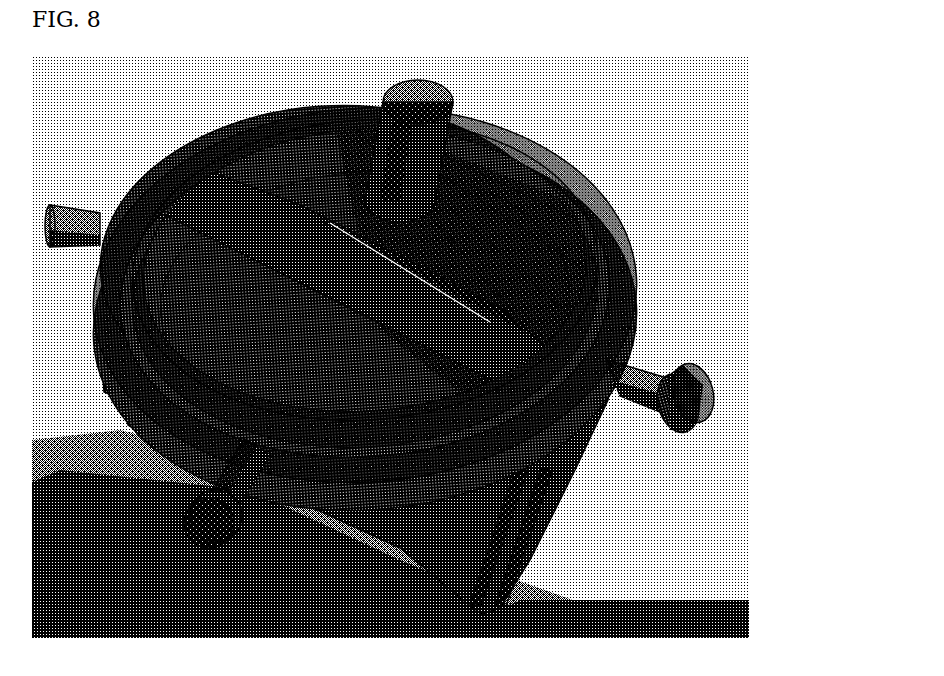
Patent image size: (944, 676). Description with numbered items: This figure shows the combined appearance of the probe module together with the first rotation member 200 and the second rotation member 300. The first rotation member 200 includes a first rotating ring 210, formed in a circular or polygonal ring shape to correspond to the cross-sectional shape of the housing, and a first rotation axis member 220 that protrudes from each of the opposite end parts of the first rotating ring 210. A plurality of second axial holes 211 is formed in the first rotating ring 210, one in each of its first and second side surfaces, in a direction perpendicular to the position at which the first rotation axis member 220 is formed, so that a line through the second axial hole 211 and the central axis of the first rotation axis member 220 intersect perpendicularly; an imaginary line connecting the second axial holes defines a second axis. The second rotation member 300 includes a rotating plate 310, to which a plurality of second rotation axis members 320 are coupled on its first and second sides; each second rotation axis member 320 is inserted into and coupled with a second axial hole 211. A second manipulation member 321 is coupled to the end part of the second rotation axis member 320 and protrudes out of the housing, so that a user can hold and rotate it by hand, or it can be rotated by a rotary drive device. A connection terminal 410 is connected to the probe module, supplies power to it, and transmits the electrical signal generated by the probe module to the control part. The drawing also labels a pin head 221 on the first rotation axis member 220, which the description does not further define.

The first rotation member 200 is at (826, 325).
The first rotating ring 210 is at (495, 283).
The second axial hole 211 is at (607, 410).
The first rotation axis member 220 is at (65, 200).
The pin head 221 is at (712, 385).
The second rotation member 300 is at (826, 481).
The rotating plate 310 is at (583, 160).
The second rotation axis member 320 is at (192, 500).
The second manipulation member 321 is at (527, 547).
The connection terminal 410 is at (460, 110).